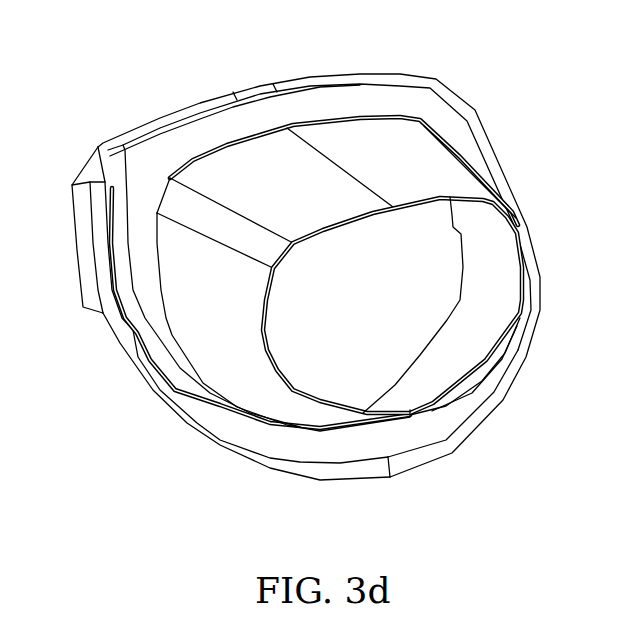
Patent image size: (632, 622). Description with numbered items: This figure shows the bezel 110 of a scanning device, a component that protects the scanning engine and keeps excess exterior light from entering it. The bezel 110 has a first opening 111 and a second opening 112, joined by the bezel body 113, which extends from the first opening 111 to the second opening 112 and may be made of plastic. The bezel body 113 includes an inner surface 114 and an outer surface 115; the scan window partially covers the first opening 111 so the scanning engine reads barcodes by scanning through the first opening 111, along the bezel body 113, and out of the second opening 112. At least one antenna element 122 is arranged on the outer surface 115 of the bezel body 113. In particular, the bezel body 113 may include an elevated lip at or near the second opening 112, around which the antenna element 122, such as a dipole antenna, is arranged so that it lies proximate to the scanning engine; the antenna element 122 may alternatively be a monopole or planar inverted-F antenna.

The bezel 110 is at (423, 63).
The first opening 111 is at (525, 310).
The second opening 112 is at (107, 318).
The bezel body 113 is at (440, 170).
The inner surface 114 is at (470, 310).
The outer surface 115 is at (240, 167).
The antenna element 122 is at (212, 410).